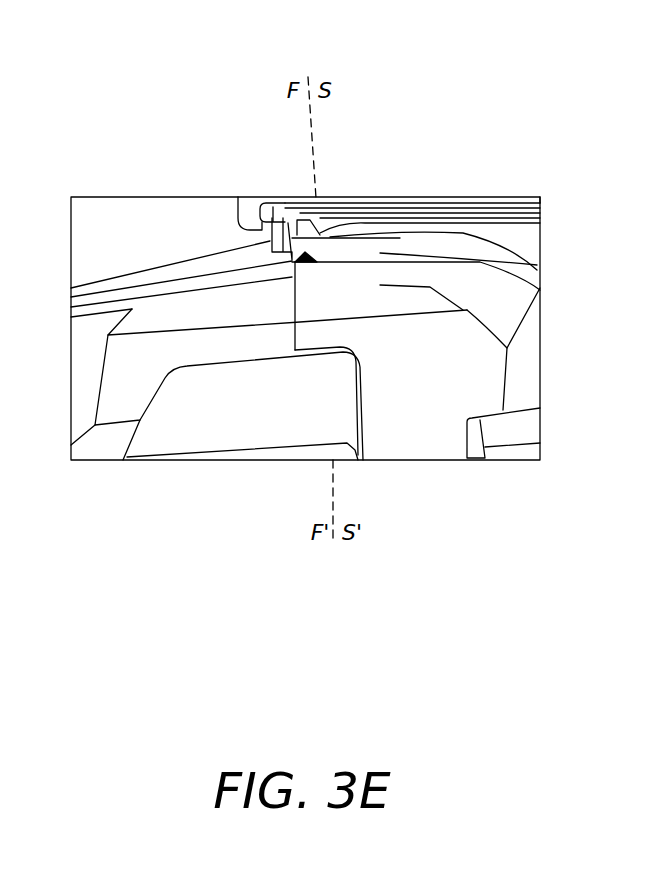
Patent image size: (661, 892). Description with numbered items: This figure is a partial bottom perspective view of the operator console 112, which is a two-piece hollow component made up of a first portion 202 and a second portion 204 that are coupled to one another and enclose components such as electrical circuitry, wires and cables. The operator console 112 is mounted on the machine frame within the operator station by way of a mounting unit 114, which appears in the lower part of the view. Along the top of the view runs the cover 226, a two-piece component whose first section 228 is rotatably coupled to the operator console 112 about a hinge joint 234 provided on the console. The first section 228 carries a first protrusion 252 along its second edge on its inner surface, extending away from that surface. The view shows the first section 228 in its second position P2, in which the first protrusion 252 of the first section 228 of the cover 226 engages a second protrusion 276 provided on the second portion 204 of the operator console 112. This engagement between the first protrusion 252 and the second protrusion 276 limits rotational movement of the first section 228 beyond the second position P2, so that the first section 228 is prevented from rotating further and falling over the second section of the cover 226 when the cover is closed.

The operator console 112 is at (582, 155).
The mounting unit 114 is at (220, 440).
The first portion 202 is at (345, 245).
The second portion 204 is at (180, 258).
The cover 226 is at (446, 188).
The first section 228 is at (400, 207).
The hinge joint 234 is at (350, 185).
The first protrusion 252 is at (238, 197).
The second protrusion 276 is at (288, 197).
The second position P2 is at (511, 170).